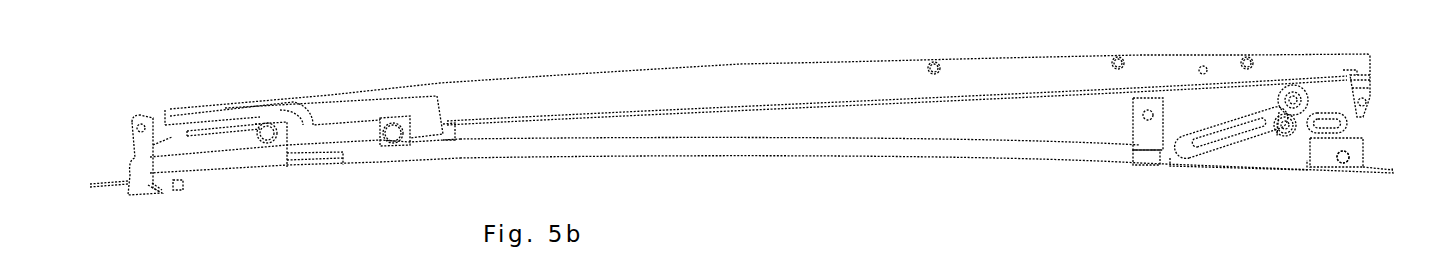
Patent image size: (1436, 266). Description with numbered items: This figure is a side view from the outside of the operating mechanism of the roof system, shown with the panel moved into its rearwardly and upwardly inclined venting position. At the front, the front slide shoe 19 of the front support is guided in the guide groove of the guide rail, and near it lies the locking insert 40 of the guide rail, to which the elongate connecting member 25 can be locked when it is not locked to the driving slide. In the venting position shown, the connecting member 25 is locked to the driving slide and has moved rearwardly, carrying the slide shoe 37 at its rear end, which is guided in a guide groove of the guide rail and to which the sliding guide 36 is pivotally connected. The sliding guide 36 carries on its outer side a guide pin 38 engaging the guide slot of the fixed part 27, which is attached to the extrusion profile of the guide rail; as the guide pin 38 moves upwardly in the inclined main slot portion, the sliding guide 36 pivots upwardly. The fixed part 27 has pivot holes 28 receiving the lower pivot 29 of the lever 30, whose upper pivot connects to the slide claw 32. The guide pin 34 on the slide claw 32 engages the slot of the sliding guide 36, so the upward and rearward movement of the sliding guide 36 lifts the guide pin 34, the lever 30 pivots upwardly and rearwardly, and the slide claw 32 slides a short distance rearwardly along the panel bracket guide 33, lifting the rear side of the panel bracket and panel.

The front slide shoe 19 is at (155, 184).
The connecting member 25 is at (762, 147).
The fixed part 27 is at (1255, 152).
The pivot holes 28 is at (1343, 160).
The lower pivot 29 is at (1343, 157).
The lever 30 is at (1352, 132).
The slide claw 32 is at (1370, 74).
The panel bracket guide 33 is at (1003, 93).
The guide pin 34 is at (1297, 100).
The sliding guide 36 is at (1188, 105).
The slide shoe 37 is at (1148, 138).
The guide pin 38 is at (1281, 122).
The locking insert 40 is at (257, 160).